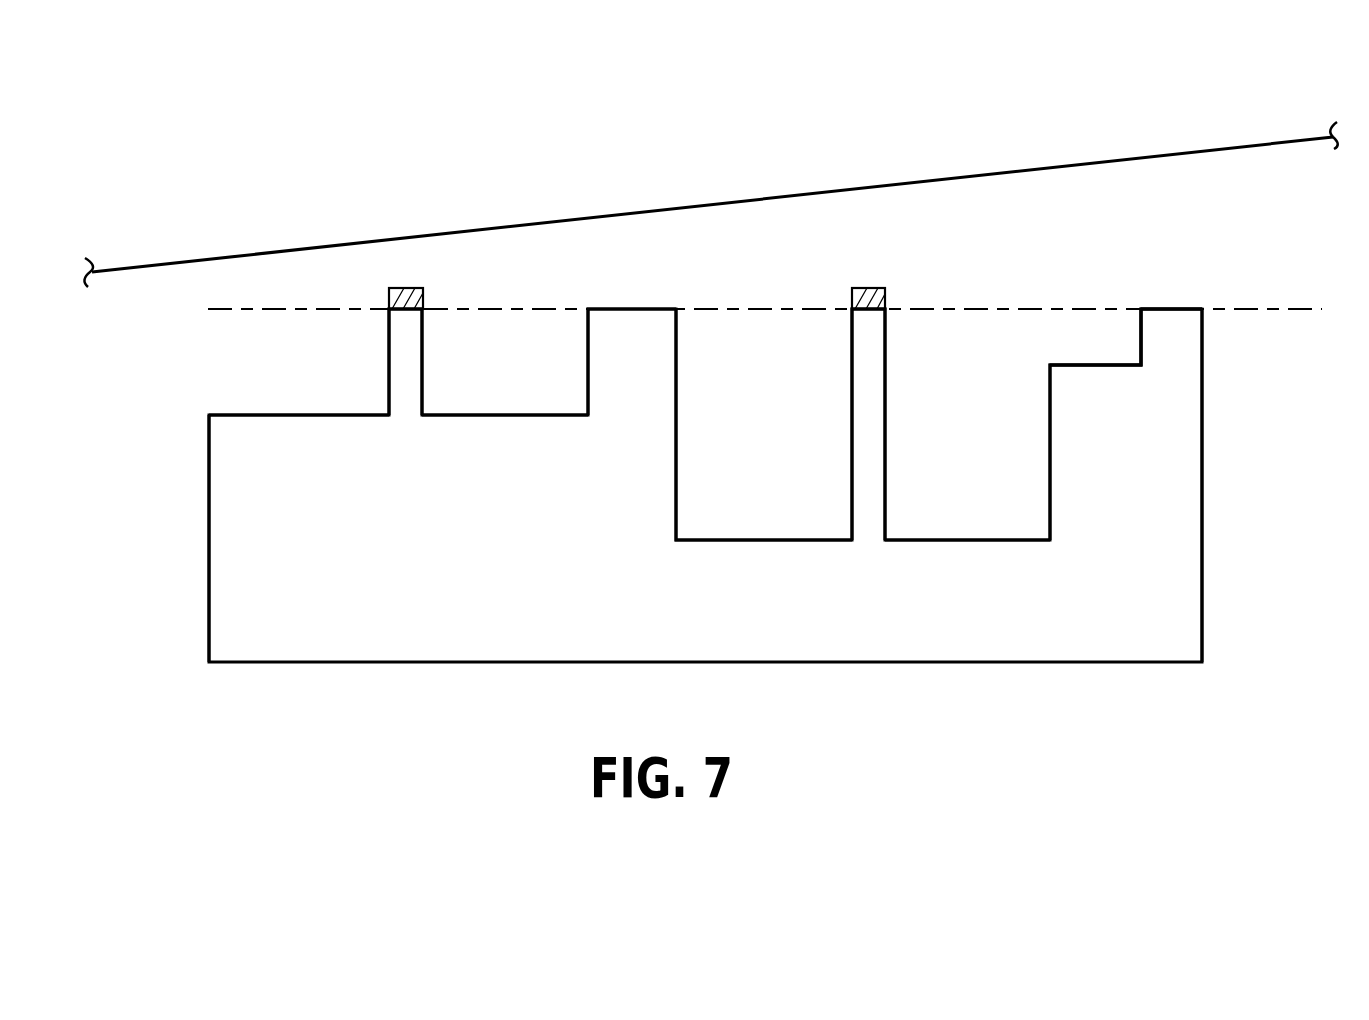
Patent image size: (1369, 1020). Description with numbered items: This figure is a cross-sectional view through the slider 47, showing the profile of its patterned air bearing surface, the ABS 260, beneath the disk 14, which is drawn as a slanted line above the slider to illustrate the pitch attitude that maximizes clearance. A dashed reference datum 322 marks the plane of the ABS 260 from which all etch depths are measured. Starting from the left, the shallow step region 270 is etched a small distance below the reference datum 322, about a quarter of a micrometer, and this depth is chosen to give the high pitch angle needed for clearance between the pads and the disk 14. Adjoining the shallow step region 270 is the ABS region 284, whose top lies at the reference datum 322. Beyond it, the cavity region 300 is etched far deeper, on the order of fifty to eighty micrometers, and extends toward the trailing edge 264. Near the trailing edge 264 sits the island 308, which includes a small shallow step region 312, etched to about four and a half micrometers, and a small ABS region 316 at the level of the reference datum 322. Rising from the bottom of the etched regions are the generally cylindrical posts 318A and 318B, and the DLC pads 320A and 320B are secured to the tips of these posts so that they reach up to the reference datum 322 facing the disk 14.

The disk 14 is at (667, 208).
The slider 47 is at (477, 570).
The ABS 260 is at (209, 547).
The trailing edge 264 is at (1202, 550).
The shallow step region 270 is at (398, 397).
The ABS region 284 is at (632, 342).
The cavity region 300 is at (863, 424).
The island 308 is at (1146, 470).
The shallow step region 312 is at (1095, 337).
The ABS region 316 is at (1171, 290).
The post 318A is at (407, 396).
The post 318B is at (864, 423).
The DLC pad 320A is at (414, 288).
The DLC pad 320B is at (866, 288).
The reference datum 322 is at (727, 309).